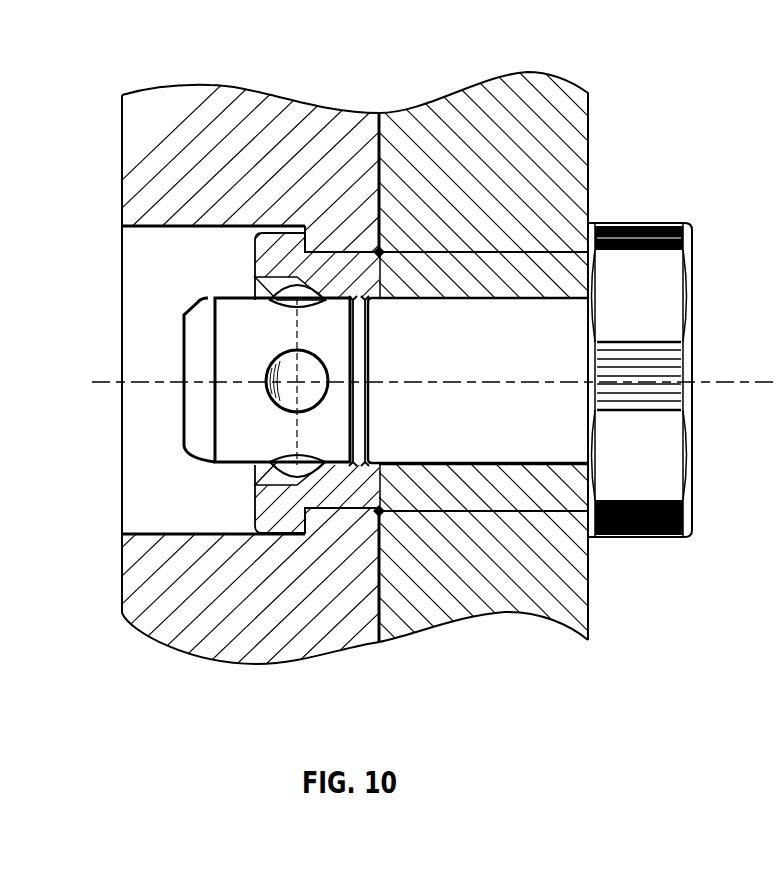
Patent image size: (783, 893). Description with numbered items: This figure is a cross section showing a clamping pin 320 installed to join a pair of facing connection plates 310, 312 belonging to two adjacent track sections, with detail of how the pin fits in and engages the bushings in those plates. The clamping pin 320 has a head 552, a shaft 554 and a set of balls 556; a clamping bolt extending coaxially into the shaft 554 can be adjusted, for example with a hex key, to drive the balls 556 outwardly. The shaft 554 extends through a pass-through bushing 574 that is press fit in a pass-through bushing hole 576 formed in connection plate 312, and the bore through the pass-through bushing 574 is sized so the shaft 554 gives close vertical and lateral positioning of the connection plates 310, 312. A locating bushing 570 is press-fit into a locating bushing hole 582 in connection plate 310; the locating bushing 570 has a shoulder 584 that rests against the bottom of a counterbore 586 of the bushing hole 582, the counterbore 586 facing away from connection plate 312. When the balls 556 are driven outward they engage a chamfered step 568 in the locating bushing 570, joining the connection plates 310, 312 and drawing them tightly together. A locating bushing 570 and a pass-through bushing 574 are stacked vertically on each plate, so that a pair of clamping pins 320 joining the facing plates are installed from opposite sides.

The connection plate 310 is at (187, 105).
The connection plate 312 is at (532, 98).
The clamping pin 320 is at (693, 300).
The head 552 is at (663, 224).
The shaft 554 is at (473, 332).
The set of balls 556 is at (258, 480).
The chamfered step 568 is at (262, 288).
The locating bushing 570 is at (379, 514).
The pass-through bushing 574 is at (533, 488).
The pass-through bushing hole 576 is at (560, 512).
The locating bushing hole 582 is at (140, 445).
The shoulder 584 is at (280, 517).
The counterbore 586 is at (153, 230).